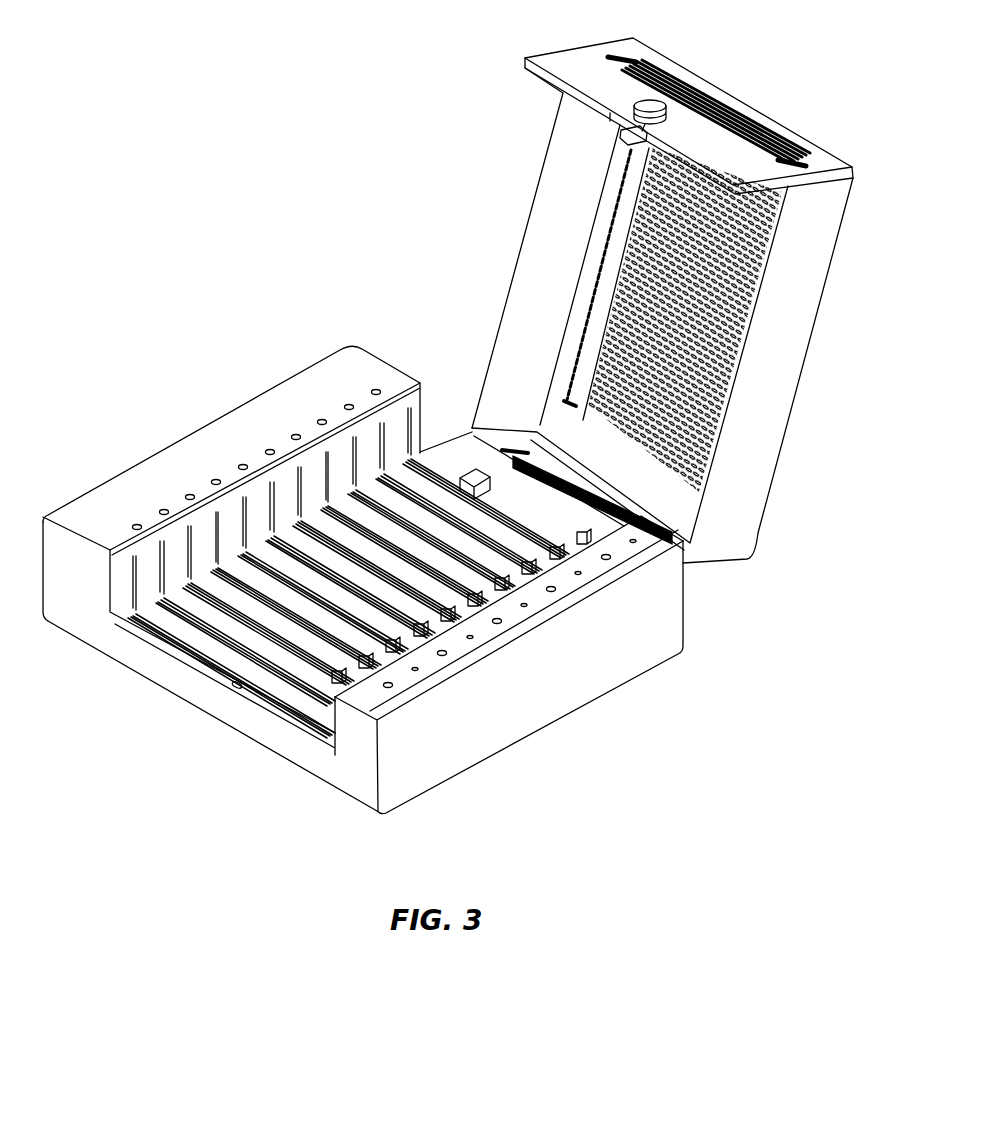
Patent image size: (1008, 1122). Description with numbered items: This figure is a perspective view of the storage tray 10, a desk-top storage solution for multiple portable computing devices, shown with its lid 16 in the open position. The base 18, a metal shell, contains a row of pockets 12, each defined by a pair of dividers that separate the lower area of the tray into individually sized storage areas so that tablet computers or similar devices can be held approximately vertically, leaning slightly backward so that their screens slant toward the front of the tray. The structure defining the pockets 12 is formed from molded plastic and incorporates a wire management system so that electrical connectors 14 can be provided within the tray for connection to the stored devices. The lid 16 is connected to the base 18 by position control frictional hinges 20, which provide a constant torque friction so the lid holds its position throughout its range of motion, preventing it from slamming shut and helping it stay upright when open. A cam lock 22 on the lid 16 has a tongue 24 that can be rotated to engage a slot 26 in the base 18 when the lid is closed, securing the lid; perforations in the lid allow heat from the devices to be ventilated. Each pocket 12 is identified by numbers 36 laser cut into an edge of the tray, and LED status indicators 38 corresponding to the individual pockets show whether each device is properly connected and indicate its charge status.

The storage tray 10 is at (199, 212).
The pockets 12 is at (393, 438).
The electrical connectors 14 is at (524, 609).
The lid 16 is at (775, 388).
The base 18 is at (663, 613).
The position control frictional hinges 20 is at (473, 472).
The cam lock 22 is at (640, 103).
The tongue 24 is at (622, 138).
The slot 26 is at (232, 689).
The numbers 36 is at (552, 593).
The LED status indicators 38 is at (268, 450).